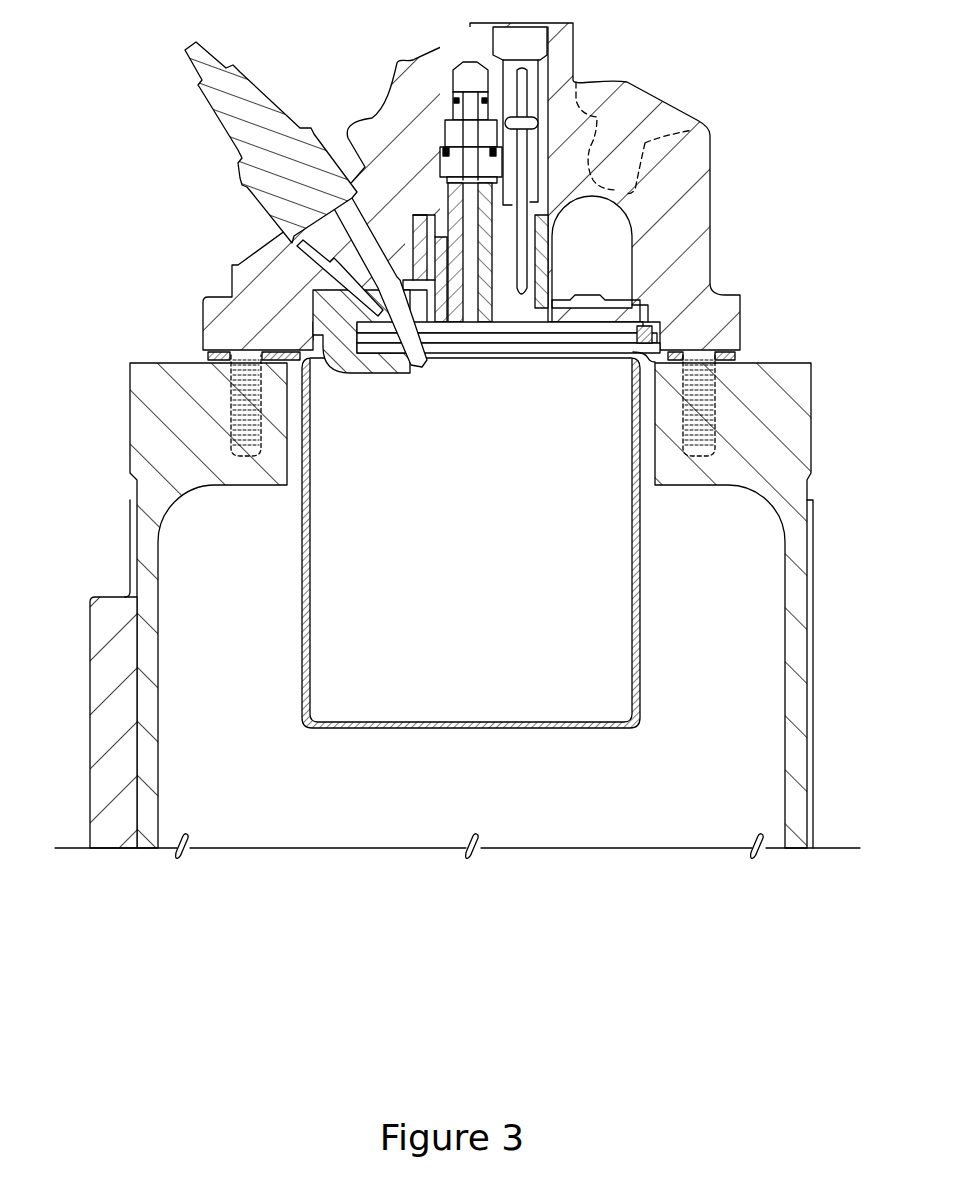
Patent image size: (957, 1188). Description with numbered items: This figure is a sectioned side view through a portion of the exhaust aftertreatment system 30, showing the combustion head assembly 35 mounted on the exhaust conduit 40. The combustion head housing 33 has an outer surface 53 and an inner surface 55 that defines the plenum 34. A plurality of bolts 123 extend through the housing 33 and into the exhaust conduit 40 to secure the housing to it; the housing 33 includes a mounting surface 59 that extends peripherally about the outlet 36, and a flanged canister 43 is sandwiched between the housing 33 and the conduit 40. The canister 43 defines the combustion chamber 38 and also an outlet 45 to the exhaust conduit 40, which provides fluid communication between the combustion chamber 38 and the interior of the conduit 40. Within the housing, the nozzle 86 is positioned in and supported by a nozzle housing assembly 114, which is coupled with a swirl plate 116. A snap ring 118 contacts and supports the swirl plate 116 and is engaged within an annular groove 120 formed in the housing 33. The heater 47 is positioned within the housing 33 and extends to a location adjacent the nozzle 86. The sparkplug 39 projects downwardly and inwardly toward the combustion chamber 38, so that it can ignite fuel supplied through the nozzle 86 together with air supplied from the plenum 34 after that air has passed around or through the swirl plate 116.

The aftertreatment system 30 is at (124, 182).
The combustion head housing 33 is at (712, 150).
The plenum 34 is at (606, 253).
The combustion head assembly 35 is at (471, 204).
The outlet 36 is at (630, 353).
The combustion chamber 38 is at (477, 571).
The sparkplug 39 is at (236, 172).
The exhaust conduit 40 is at (810, 645).
The flanged canister 43 is at (641, 645).
The outlet 45 is at (553, 730).
The heater 47 is at (522, 107).
The outer surface 53 is at (712, 238).
The inner surface 55 is at (634, 263).
The mounting surface 59 is at (217, 366).
The nozzle 86 is at (444, 210).
The nozzle housing assembly 114 is at (519, 332).
The swirl plate 116 is at (592, 306).
The snap ring 118 is at (664, 350).
The annular groove 120 is at (650, 326).
The bolts 123 is at (232, 420).